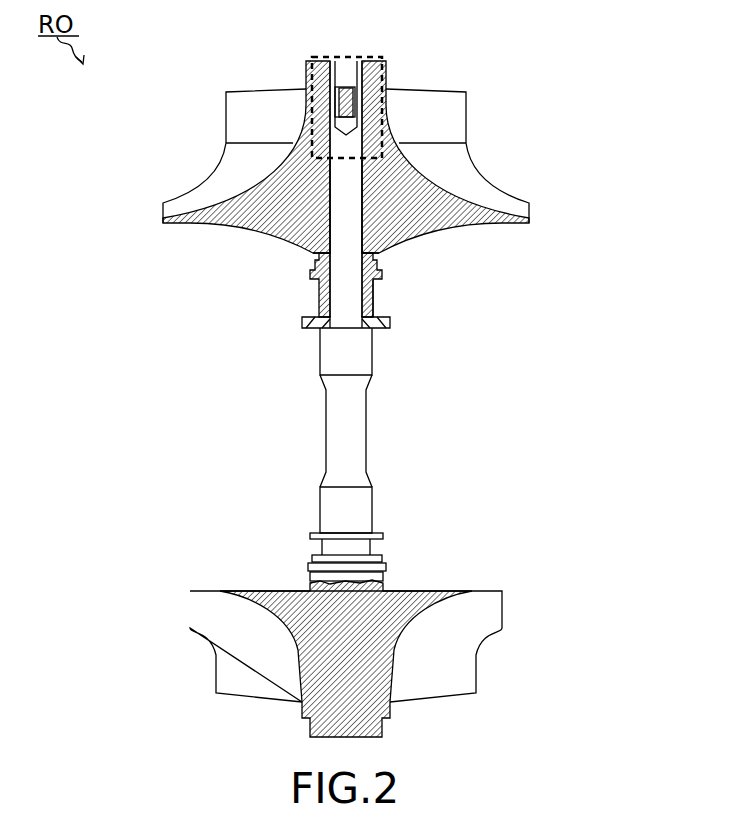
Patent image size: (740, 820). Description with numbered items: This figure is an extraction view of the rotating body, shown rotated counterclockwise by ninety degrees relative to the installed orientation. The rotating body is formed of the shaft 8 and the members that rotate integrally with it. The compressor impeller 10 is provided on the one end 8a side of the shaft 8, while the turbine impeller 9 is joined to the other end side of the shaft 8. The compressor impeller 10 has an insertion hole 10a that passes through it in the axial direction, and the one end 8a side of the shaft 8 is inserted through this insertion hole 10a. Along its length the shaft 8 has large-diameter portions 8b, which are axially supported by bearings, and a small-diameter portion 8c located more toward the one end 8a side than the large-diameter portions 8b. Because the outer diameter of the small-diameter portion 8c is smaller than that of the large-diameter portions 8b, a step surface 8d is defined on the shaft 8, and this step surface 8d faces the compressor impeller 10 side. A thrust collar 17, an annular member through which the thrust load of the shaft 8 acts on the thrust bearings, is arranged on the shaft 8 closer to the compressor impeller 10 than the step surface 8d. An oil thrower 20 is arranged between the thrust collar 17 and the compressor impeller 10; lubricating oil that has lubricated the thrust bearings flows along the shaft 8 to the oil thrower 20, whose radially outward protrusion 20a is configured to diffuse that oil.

The shaft 8 is at (327, 440).
The one end 8a is at (355, 57).
The large-diameter portions 8b is at (372, 507).
The small-diameter portion 8c is at (425, 236).
The step surface 8d is at (372, 307).
The turbine impeller 9 is at (215, 680).
The compressor impeller 10 is at (203, 182).
The insertion hole 10a is at (356, 193).
The thrust collar 17 is at (302, 322).
The oil thrower 20 is at (312, 272).
The protrusion 20a is at (383, 278).